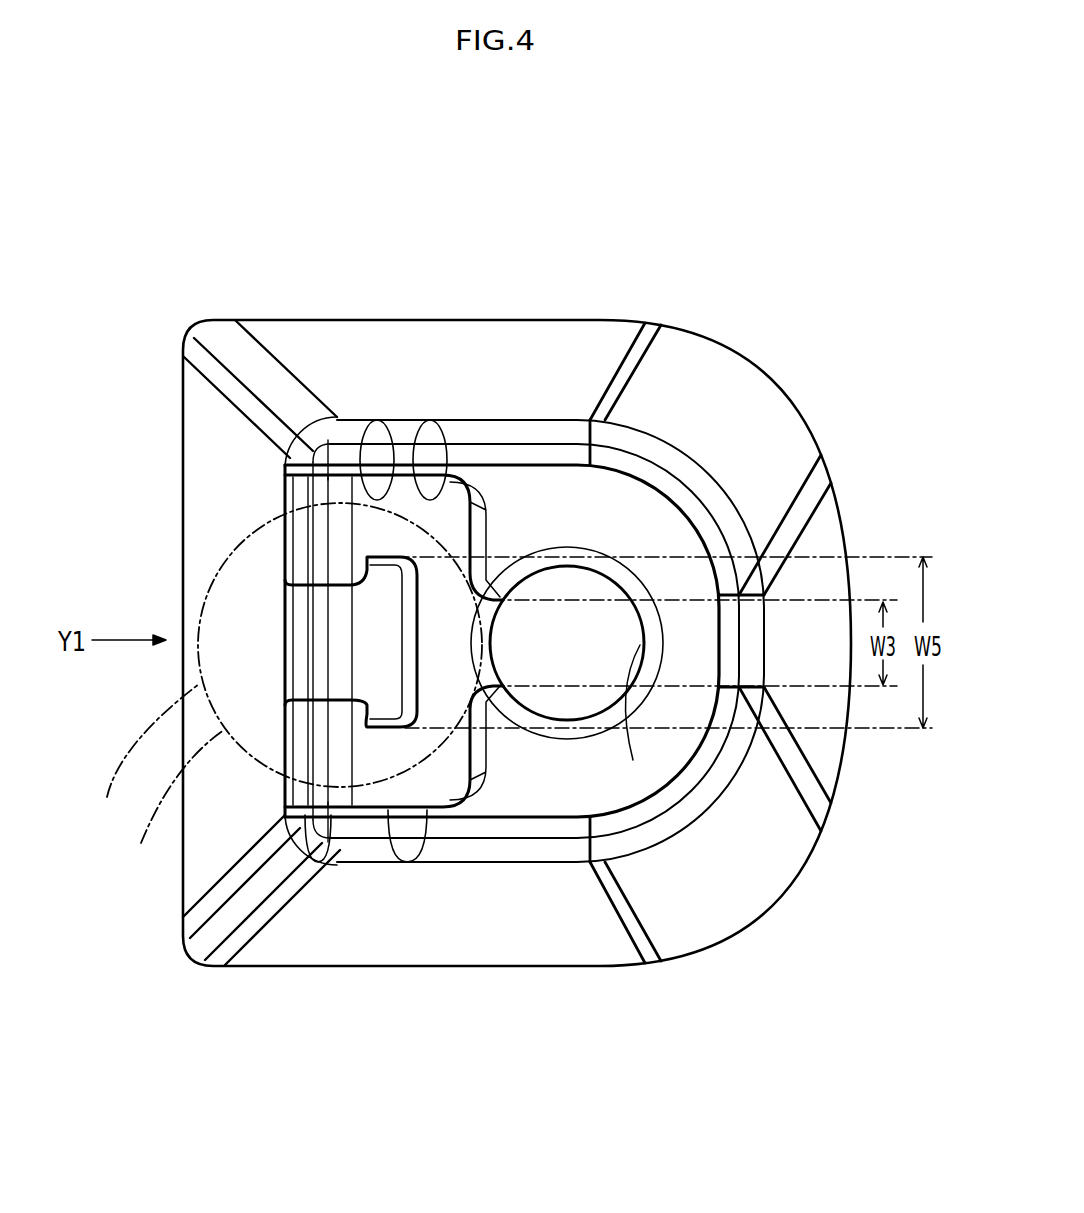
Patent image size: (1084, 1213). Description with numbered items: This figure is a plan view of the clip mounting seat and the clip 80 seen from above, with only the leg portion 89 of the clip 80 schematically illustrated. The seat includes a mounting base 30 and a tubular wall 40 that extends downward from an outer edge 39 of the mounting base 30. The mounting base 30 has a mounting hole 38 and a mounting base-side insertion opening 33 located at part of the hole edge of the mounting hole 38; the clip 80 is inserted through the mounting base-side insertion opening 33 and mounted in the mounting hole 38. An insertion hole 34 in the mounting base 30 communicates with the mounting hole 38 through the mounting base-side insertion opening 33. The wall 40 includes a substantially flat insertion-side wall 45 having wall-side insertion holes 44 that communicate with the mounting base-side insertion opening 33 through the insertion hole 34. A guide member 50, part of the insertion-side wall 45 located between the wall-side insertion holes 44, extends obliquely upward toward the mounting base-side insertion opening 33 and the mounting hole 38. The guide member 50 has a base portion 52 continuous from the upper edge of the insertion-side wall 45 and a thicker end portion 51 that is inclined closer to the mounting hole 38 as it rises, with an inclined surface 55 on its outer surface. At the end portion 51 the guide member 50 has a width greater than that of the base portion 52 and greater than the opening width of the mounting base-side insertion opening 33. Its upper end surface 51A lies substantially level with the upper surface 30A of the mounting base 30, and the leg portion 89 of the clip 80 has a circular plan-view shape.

The mounting base 30 is at (518, 490).
The upper surface of the mounting base 30A is at (546, 495).
The mounting base-side insertion opening 33 is at (487, 688).
The insertion hole 34 is at (406, 448).
The mounting hole 38 is at (633, 760).
The outer edge of the mounting base 39 is at (636, 478).
The wall 40 is at (765, 880).
The wall-side insertion holes 44 is at (352, 448).
The insertion-side wall 45 is at (200, 446).
The guide member 50 is at (300, 650).
The end portion 51 is at (385, 673).
The upper end surface 51A is at (432, 605).
The base portion 52 is at (303, 657).
The inclined surface 55 is at (337, 658).
The clip 80 is at (119, 831).
The leg portion 89 is at (175, 804).